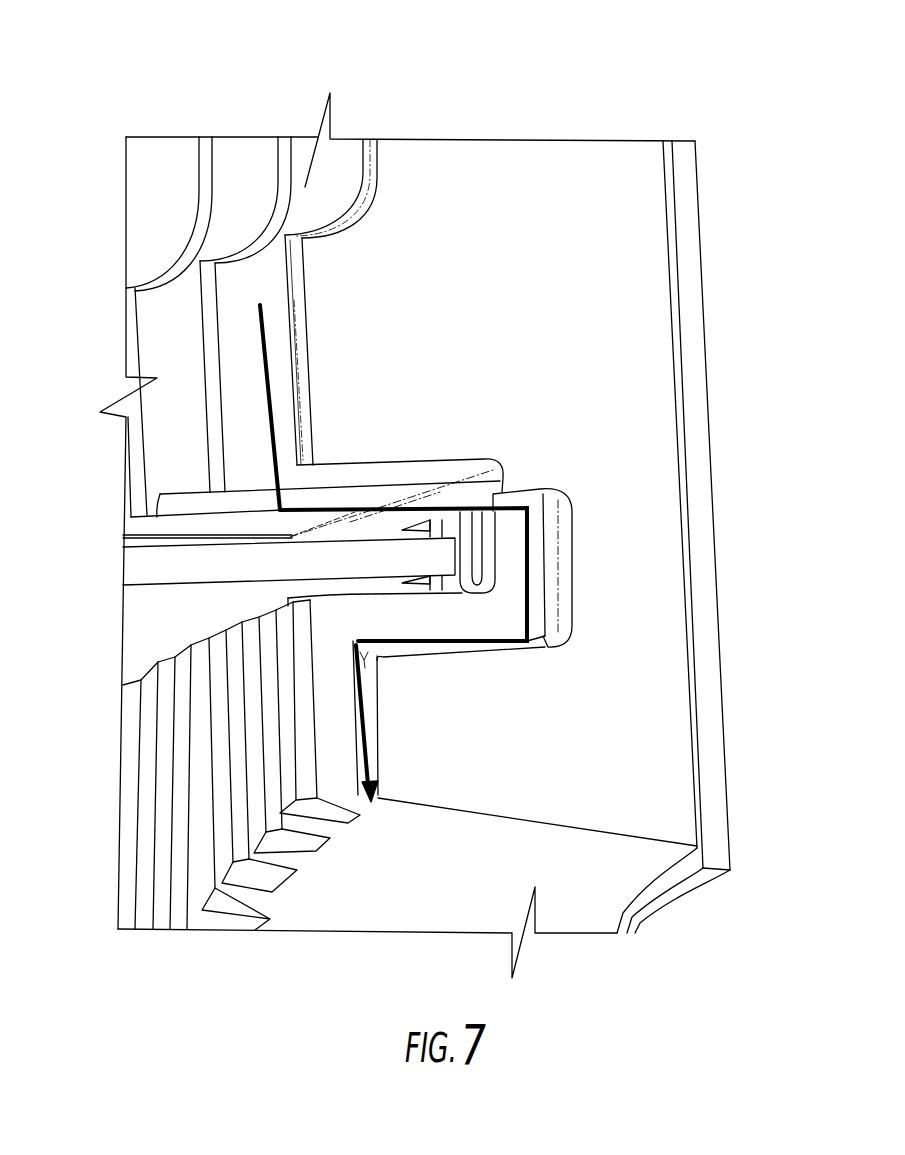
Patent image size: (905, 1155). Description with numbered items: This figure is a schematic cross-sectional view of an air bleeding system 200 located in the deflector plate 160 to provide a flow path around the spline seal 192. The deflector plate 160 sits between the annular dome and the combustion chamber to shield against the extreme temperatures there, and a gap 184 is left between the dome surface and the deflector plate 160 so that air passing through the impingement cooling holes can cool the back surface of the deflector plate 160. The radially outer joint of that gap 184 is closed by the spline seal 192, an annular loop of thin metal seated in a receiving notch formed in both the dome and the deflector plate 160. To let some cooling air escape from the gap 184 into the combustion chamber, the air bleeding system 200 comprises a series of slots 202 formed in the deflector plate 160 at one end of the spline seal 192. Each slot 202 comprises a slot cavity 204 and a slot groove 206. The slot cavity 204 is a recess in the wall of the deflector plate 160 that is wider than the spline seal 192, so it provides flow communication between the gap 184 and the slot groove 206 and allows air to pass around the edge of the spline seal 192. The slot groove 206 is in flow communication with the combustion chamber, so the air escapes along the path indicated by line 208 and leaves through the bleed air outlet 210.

The deflector plate 160 is at (516, 272).
The gap 184 is at (152, 197).
The spline seal 192 is at (297, 565).
The air bleeding system 200 is at (742, 685).
The slot 202 is at (507, 656).
The slot cavity 204 is at (535, 577).
The slot groove 206 is at (343, 692).
The line 208 is at (270, 378).
The outlet 210 is at (295, 842).